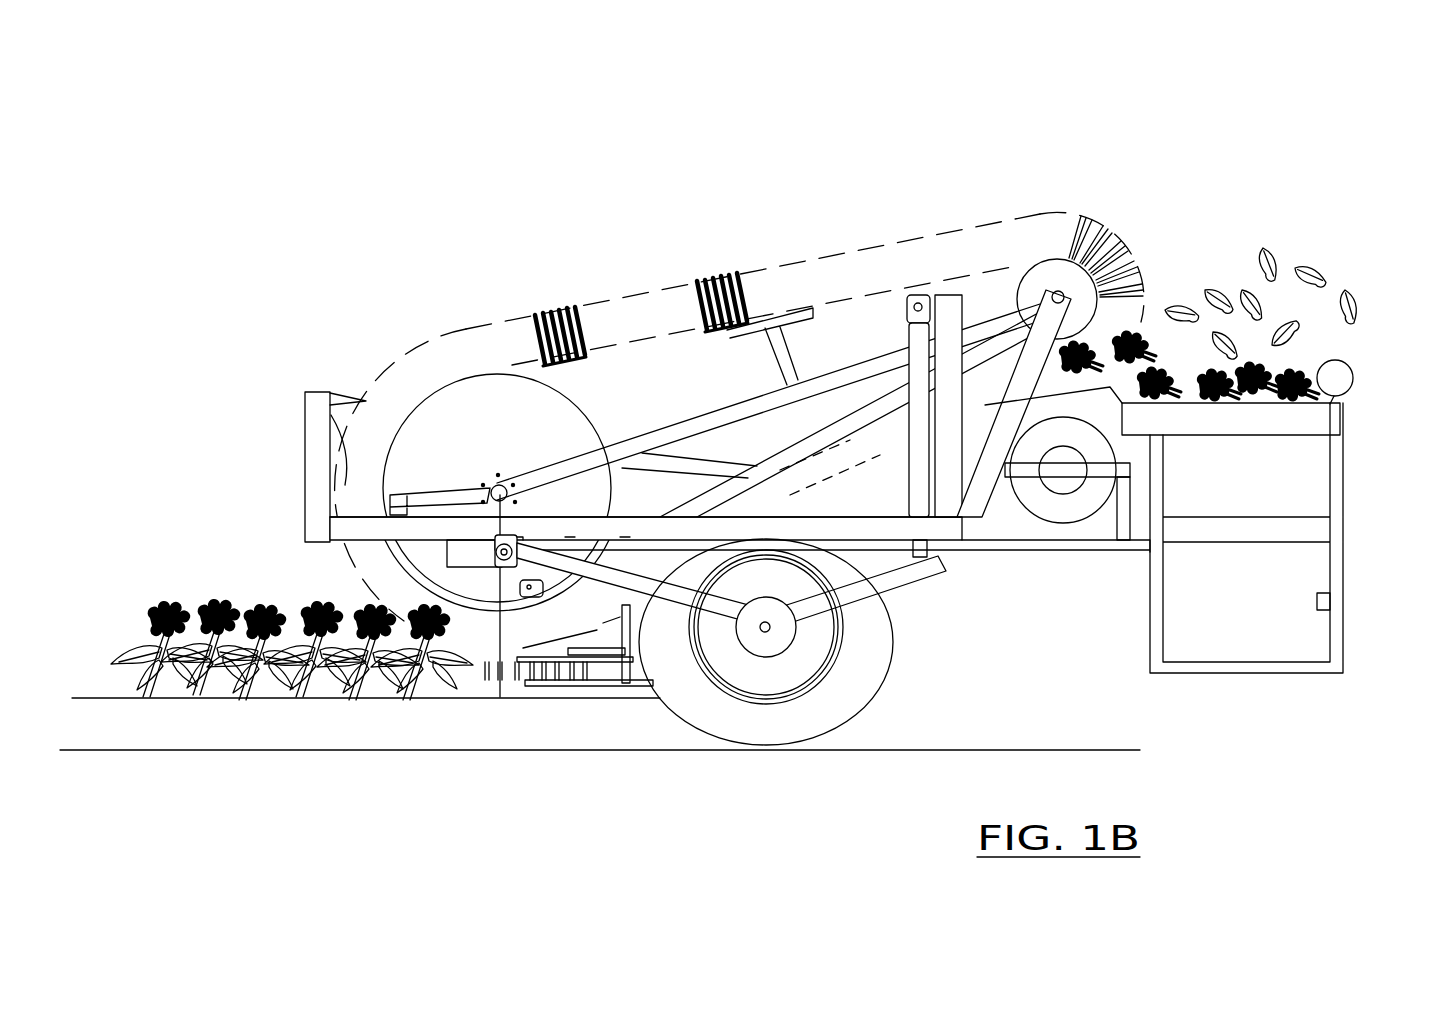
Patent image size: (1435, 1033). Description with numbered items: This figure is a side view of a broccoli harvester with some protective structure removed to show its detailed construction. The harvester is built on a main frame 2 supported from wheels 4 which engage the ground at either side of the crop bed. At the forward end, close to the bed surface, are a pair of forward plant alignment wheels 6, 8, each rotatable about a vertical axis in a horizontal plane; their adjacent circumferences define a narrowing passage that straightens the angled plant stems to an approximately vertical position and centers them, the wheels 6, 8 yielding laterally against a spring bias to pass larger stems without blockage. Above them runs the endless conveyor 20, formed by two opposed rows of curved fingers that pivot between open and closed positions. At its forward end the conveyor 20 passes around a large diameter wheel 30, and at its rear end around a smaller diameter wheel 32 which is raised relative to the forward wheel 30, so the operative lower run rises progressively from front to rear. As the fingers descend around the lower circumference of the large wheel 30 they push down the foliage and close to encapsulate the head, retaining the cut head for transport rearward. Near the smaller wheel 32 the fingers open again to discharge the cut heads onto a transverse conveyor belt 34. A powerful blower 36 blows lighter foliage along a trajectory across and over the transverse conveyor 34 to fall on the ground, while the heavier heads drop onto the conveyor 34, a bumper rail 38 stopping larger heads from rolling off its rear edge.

The main frame 2 is at (955, 535).
The wheels 4 is at (852, 698).
The forward plant alignment wheel 6 is at (569, 676).
The forward plant alignment wheel 8 is at (551, 665).
The endless conveyor 20 is at (788, 282).
The large diameter wheel 30 is at (472, 423).
The smaller diameter wheel 32 is at (1047, 273).
The transverse conveyor belt 34 is at (1232, 413).
The blower 36 is at (1085, 415).
The bumper rail 38 is at (1343, 375).